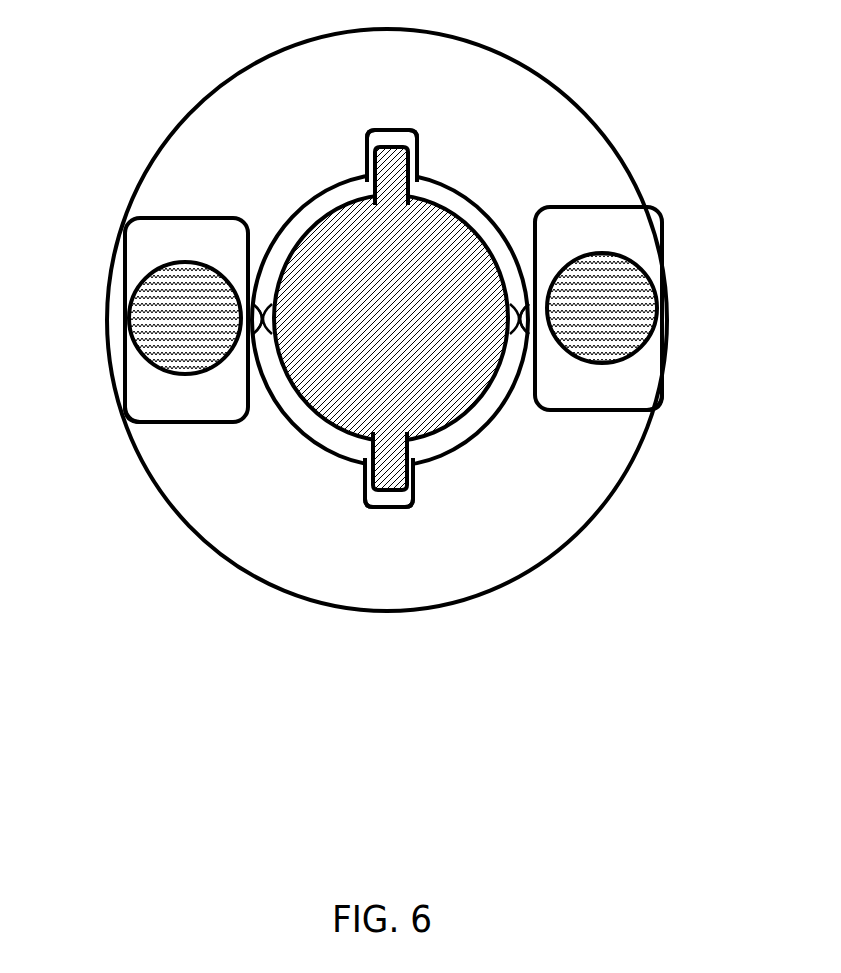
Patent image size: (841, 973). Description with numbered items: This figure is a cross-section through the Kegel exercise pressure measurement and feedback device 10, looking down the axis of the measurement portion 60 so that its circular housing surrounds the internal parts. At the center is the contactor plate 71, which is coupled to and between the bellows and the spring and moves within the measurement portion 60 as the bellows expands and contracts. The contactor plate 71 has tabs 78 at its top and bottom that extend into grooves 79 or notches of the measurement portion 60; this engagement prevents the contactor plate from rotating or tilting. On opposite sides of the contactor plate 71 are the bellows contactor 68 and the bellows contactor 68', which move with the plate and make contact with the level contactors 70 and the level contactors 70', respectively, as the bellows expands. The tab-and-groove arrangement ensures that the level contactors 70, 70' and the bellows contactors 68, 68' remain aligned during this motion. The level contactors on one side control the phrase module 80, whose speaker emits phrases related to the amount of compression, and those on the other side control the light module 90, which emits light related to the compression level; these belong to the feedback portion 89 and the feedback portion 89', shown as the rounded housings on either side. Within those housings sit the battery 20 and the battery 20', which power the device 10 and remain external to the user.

The Kegel exercise pressure measurement and feedback device 10 is at (387, 309).
The measurement portion 60 is at (565, 108).
The contactor plate 71 is at (458, 235).
The tabs 78 is at (413, 154).
The grooves 79 is at (374, 131).
The bellows contactor 68 is at (239, 251).
The bellows contactor 68' is at (558, 253).
The level contactors 70 is at (214, 389).
The level contactors 70' is at (516, 393).
The feedback portion 89 is at (138, 306).
The feedback portion 89' is at (643, 297).
The phrase module 80 is at (147, 398).
The light module 90 is at (630, 385).
The battery 20 is at (134, 318).
The battery 20' is at (649, 308).